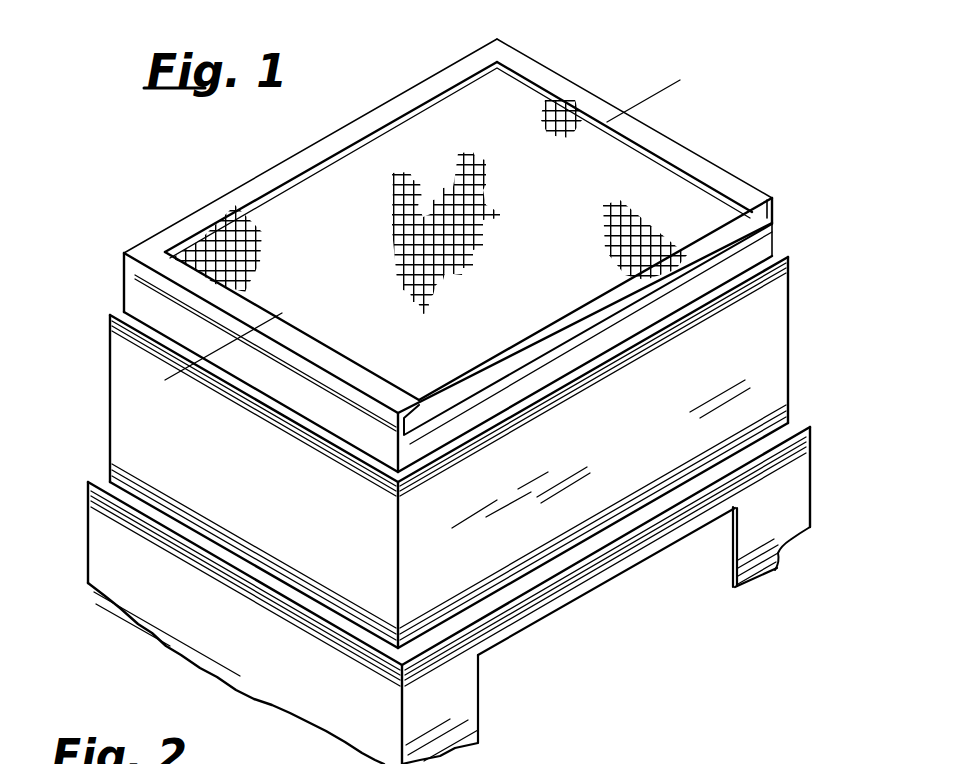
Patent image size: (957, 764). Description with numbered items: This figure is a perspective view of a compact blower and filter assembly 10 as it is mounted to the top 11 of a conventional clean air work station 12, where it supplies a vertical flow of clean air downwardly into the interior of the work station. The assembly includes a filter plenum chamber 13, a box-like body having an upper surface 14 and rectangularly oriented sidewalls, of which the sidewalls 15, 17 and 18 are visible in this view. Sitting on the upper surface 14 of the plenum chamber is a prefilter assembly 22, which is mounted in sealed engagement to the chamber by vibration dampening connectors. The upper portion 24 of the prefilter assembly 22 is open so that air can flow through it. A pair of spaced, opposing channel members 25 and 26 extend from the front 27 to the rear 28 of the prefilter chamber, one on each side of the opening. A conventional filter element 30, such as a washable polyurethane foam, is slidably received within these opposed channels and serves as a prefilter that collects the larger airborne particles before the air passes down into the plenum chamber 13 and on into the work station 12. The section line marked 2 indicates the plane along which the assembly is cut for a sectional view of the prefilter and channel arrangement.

The compact blower and filter assembly 10 is at (88, 425).
The top 11 is at (788, 432).
The clean air work station 12 is at (779, 548).
The filter plenum chamber 13 is at (108, 383).
The upper surface 14 is at (784, 258).
The sidewall 15 is at (130, 453).
The sidewall 17 is at (585, 456).
The sidewall 18 is at (108, 345).
The prefilter assembly 22 is at (240, 178).
The upper portion 24 is at (410, 95).
The channel member 25 is at (203, 258).
The channel member 26 is at (664, 160).
The front 27 is at (772, 240).
The rear 28 is at (321, 140).
The filter element 30 is at (470, 100).
The section line 2- 2 is at (654, 78).